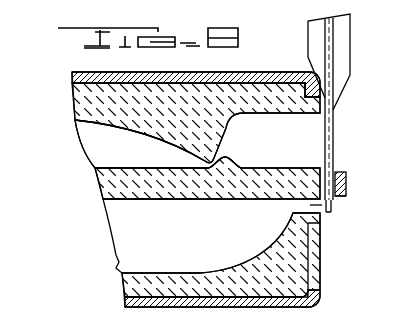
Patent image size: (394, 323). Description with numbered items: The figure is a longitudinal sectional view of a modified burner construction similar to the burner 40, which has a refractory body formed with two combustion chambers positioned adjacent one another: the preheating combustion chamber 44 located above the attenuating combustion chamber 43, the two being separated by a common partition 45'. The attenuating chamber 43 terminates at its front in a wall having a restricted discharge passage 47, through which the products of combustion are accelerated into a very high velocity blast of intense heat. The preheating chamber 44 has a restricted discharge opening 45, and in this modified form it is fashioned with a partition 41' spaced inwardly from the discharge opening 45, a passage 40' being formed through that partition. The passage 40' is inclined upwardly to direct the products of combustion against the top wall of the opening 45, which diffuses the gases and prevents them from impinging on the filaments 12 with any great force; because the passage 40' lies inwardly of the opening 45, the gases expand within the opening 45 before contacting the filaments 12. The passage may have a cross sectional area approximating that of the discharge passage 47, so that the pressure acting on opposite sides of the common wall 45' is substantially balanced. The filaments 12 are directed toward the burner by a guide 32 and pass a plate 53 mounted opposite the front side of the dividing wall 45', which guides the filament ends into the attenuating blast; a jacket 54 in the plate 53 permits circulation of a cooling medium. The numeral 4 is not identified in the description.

The burner 40 is at (176, 113).
The partition 41' is at (140, 141).
The passage 40' is at (241, 154).
The combustion chamber 44 is at (92, 137).
The discharge opening 45 is at (233, 164).
The partition 45' is at (135, 188).
The combustion chamber 43 is at (132, 243).
The discharge passage 47 is at (323, 210).
The plate 53 is at (348, 177).
The jacket 54 is at (346, 193).
The guide 32 is at (362, 35).
The filaments 12 is at (336, 125).
The partial numeral 4 is at (389, 243).